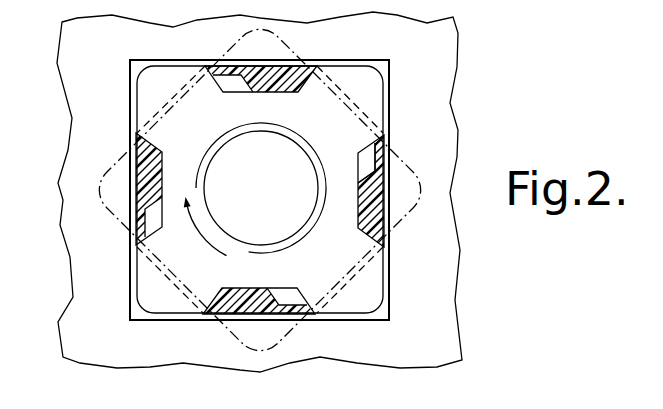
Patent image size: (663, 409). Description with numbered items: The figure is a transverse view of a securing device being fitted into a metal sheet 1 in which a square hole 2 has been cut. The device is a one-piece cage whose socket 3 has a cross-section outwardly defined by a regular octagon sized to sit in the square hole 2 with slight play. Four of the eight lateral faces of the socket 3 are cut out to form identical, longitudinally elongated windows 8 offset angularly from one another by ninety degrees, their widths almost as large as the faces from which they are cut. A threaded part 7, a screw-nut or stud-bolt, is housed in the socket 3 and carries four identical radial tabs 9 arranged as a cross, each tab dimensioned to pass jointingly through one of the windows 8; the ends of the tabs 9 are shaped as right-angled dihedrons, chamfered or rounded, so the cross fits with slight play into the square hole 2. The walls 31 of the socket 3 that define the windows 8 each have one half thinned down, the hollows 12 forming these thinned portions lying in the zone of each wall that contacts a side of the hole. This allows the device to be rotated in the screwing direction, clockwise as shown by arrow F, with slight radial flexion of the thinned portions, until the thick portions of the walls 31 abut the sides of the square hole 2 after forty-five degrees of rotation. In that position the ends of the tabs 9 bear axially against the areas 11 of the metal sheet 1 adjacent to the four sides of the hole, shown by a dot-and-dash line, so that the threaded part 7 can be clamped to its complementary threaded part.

The metal sheet 1 is at (440, 55).
The square hole 2 is at (384, 71).
The socket 3 is at (372, 195).
The walls of socket 31 is at (368, 208).
The threaded part 7 is at (346, 319).
The windows 8 is at (143, 244).
The radial tabs 9 is at (372, 106).
The areas of the metal sheet adjacent the hole sides 11 is at (400, 155).
The hollows 12 is at (226, 80).
The arrow indicating screwing direction F is at (191, 218).